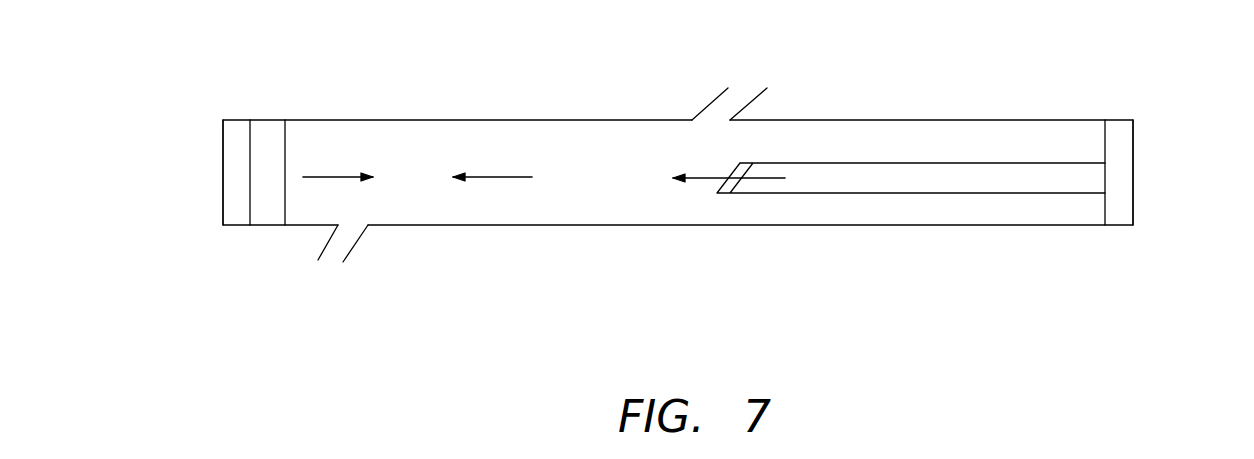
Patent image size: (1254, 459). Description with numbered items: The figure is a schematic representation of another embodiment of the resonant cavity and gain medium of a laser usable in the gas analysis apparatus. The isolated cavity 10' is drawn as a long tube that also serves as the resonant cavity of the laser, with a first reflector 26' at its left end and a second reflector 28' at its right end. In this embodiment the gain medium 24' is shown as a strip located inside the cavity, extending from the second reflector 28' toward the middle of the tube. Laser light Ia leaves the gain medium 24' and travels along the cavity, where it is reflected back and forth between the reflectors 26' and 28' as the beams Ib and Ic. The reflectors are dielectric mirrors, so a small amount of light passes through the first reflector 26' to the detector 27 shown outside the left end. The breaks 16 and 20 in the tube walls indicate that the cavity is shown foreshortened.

The isolated cavity 10' is at (678, 207).
The gap in bottom wall 16 is at (352, 250).
The gap in top wall 20 is at (713, 101).
The gain medium 24' is at (911, 113).
The first reflector 26' is at (206, 164).
The detector 27 is at (237, 200).
The second reflector 28' is at (1170, 173).